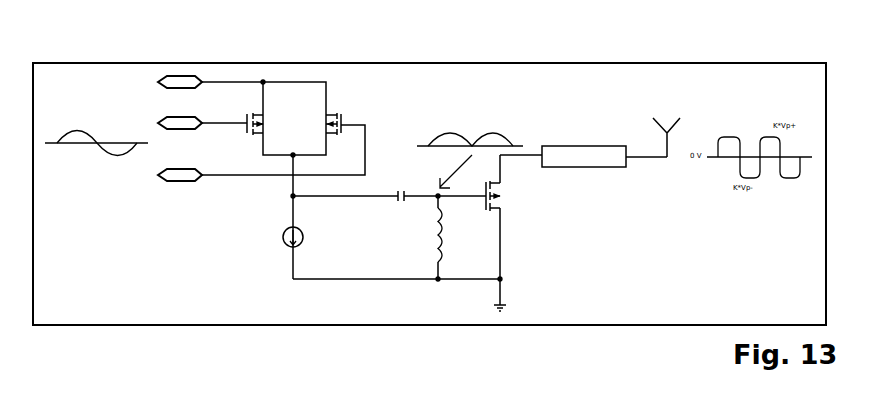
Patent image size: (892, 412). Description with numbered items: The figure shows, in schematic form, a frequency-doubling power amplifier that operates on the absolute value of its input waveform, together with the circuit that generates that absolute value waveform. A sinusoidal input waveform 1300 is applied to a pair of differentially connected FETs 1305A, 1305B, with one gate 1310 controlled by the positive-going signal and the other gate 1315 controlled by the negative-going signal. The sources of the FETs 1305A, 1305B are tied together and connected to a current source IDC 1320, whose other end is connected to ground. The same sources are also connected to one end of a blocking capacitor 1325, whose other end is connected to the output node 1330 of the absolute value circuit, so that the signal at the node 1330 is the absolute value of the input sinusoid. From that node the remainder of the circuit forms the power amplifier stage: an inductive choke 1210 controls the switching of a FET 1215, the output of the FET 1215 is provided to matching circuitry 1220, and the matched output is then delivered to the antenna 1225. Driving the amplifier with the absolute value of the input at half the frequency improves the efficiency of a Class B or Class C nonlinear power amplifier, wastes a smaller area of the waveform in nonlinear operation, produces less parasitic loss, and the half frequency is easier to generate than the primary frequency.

The sinusoidal input waveform 1300 is at (96, 146).
The gate 1310 is at (210, 102).
The gate 1315 is at (261, 153).
The differentially connected FET 1305A is at (282, 122).
The differentially connected FET 1305B is at (311, 127).
The current source IDC 1320 is at (283, 237).
The blocking capacitor 1325 is at (365, 200).
The output node 1330 is at (433, 190).
The inductive choke 1210 is at (464, 237).
The FET 1215 is at (493, 217).
The matching circuitry 1220 is at (583, 164).
The antenna 1225 is at (669, 128).